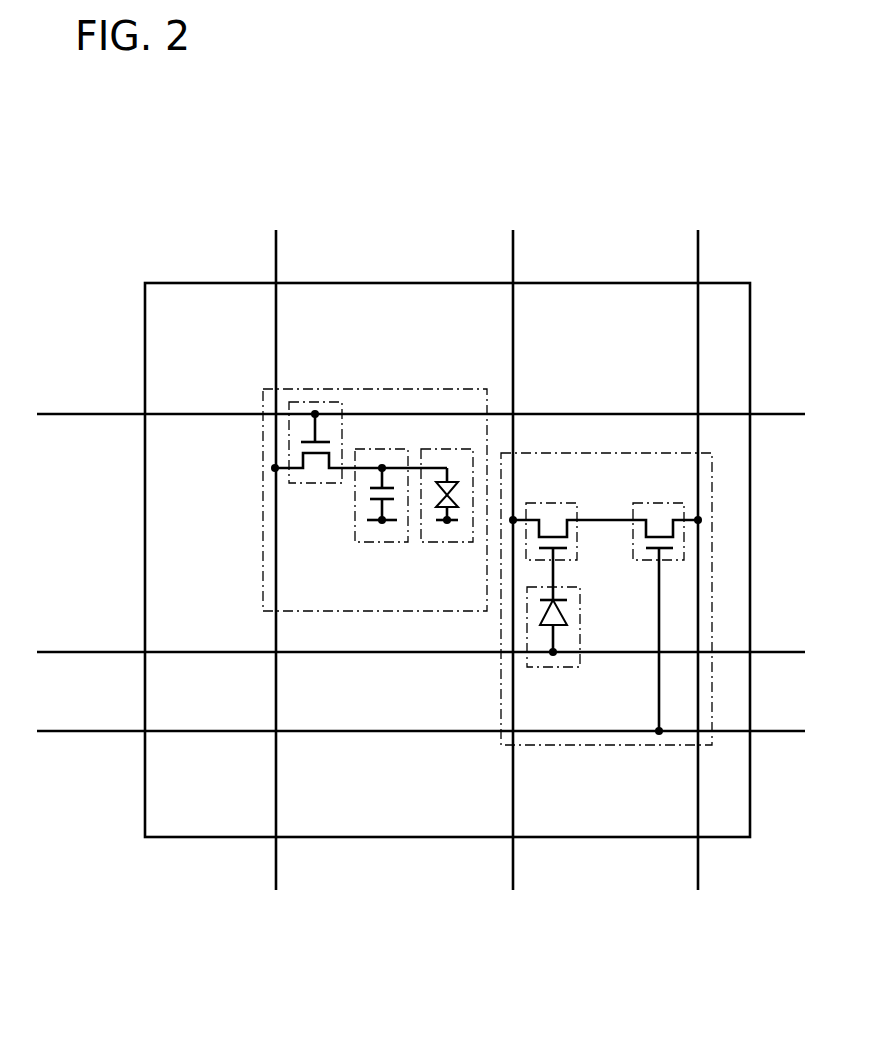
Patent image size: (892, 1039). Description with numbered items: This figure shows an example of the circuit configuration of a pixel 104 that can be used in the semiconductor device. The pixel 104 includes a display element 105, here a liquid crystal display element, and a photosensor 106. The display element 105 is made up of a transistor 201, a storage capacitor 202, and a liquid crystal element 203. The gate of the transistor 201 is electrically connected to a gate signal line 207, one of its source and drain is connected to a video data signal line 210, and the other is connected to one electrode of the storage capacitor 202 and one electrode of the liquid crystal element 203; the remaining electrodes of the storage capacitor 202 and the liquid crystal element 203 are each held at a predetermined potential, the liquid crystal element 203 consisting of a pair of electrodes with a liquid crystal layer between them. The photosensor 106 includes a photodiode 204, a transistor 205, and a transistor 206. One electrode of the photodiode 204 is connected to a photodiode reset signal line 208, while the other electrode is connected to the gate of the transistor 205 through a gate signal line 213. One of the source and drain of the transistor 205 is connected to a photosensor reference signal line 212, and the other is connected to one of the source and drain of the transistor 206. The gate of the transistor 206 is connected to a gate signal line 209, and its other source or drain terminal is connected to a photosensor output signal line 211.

The pixel 104 is at (197, 282).
The display element 105 is at (367, 387).
The photosensor 106 is at (583, 746).
The transistor 201 is at (317, 484).
The storage capacitor 202 is at (382, 543).
The liquid crystal element 203 is at (448, 543).
The photodiode 204 is at (550, 668).
The transistor 205 is at (550, 503).
The transistor 206 is at (658, 502).
The gate signal line 207 is at (102, 413).
The photodiode reset signal line 208 is at (102, 650).
The gate signal line 209 is at (102, 730).
The video data signal line 210 is at (278, 243).
The photosensor output signal line 211 is at (700, 243).
The photosensor reference signal line 212 is at (515, 243).
The gate signal line 213 is at (555, 573).